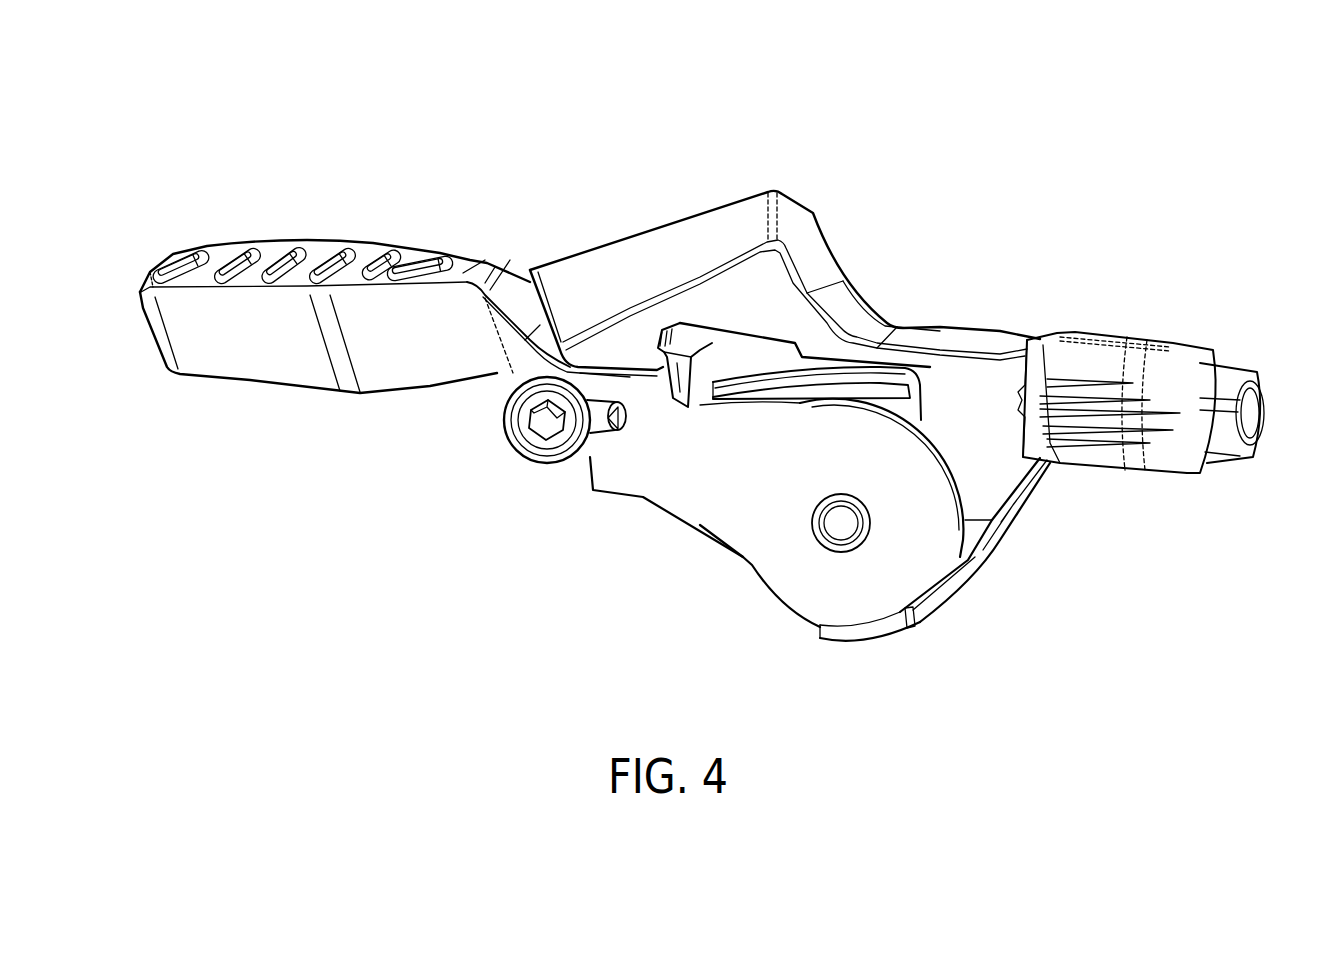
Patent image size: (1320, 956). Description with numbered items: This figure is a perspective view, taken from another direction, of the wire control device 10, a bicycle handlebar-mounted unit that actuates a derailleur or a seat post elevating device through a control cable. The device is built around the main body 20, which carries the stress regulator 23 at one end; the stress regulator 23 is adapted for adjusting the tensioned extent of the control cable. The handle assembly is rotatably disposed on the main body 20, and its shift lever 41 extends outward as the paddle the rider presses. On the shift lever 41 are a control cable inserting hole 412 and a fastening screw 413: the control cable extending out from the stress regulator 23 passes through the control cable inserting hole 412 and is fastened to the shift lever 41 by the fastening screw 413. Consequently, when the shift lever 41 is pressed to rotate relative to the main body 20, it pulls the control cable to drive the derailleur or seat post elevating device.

The wire control device 10 is at (1013, 183).
The main body 20 is at (767, 287).
The stress regulator 23 is at (1180, 453).
The shift lever 41 is at (264, 368).
The control cable inserting hole 412 is at (707, 400).
The fastening screw 413 is at (530, 443).